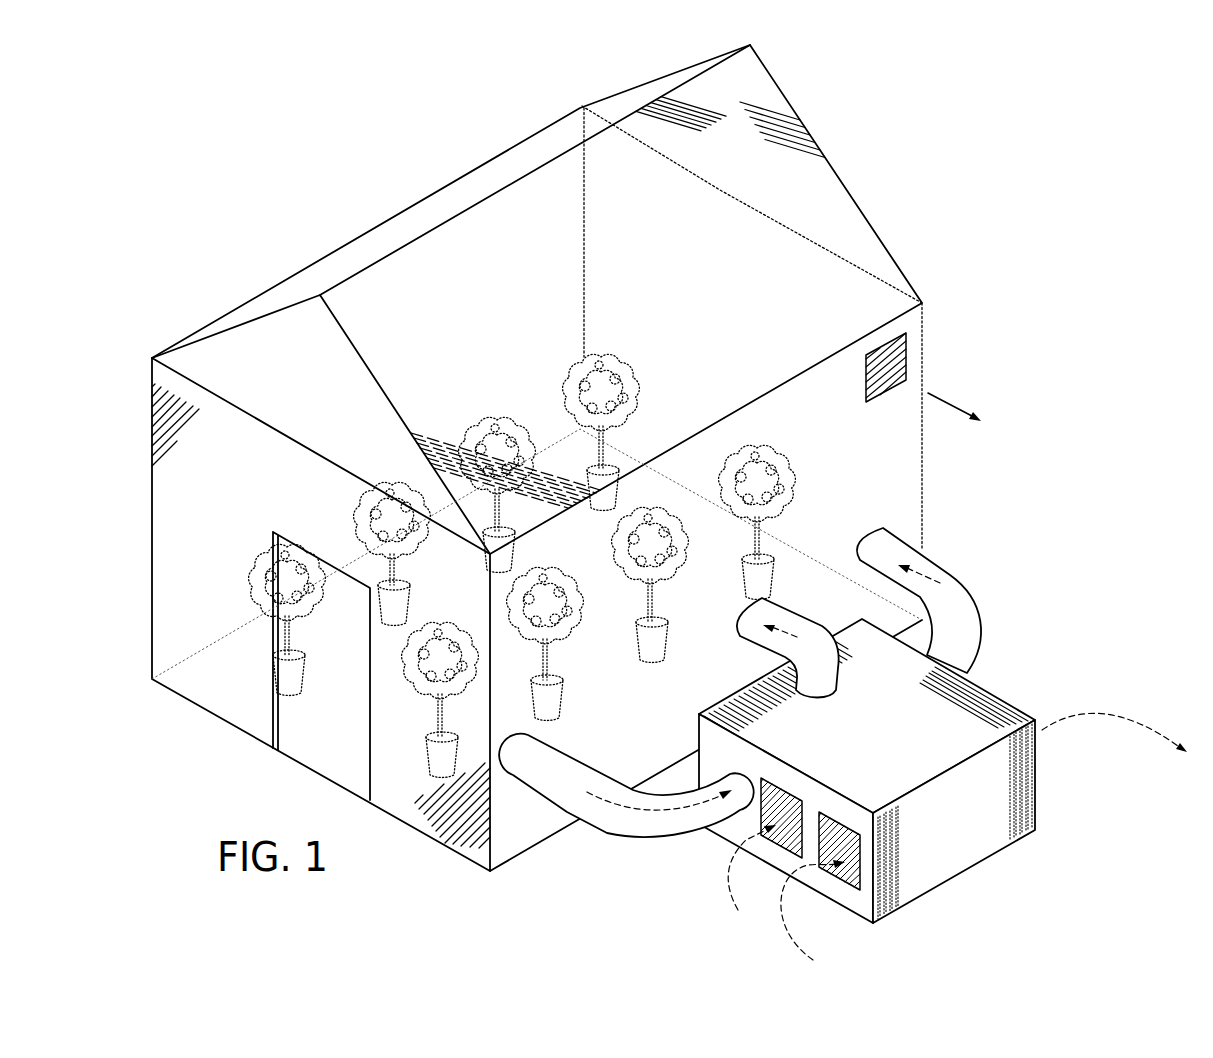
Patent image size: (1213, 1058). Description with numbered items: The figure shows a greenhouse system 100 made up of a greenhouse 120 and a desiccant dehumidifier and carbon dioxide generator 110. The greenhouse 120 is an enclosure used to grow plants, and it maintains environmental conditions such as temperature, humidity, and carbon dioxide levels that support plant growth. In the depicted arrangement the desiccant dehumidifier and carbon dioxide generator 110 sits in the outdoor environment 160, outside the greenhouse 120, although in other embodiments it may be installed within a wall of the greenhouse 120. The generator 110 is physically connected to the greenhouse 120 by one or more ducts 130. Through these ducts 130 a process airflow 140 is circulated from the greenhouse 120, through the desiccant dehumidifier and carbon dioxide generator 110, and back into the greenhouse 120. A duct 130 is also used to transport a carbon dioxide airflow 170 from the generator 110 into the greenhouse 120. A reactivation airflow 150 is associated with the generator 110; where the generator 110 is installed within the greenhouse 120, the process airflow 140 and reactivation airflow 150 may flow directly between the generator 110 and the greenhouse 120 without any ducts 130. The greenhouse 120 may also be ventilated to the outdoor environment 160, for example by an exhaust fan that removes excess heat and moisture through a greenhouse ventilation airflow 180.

The greenhouse system 100 is at (1056, 103).
The desiccant dehumidifier and carbon dioxide generator 110 is at (947, 873).
The greenhouse 120 is at (864, 190).
The duct 130 is at (587, 765).
The process airflow 140 is at (950, 590).
The reactivation airflow 150 is at (1125, 718).
The outdoor environment 160 is at (1019, 473).
The carbon dioxide airflow 170 is at (835, 676).
The greenhouse ventilation airflow 180 is at (931, 392).